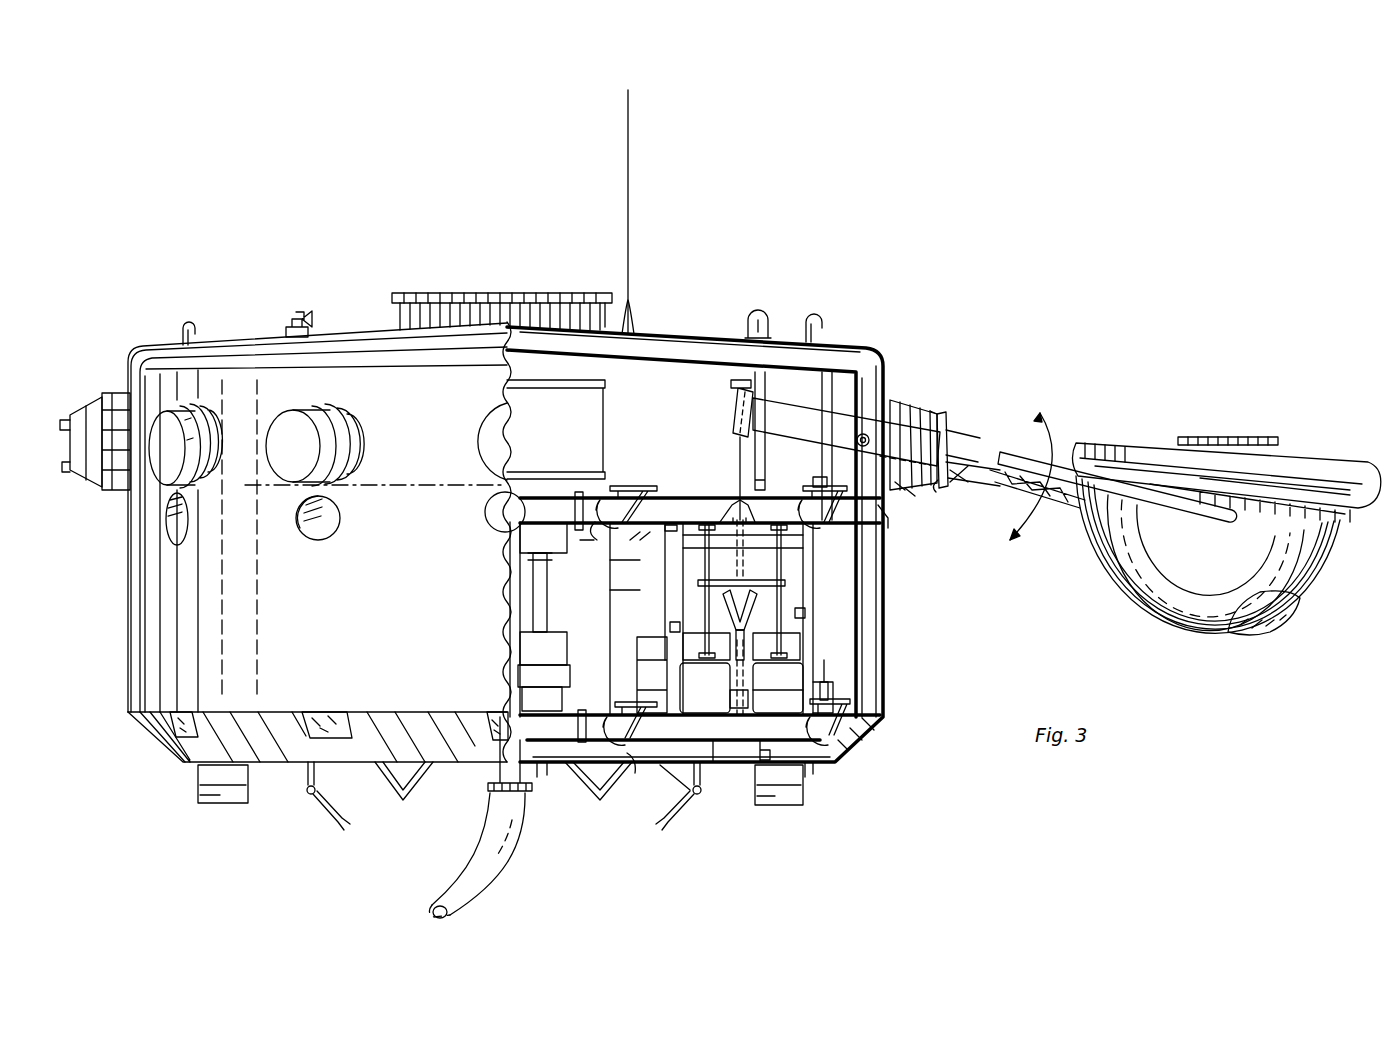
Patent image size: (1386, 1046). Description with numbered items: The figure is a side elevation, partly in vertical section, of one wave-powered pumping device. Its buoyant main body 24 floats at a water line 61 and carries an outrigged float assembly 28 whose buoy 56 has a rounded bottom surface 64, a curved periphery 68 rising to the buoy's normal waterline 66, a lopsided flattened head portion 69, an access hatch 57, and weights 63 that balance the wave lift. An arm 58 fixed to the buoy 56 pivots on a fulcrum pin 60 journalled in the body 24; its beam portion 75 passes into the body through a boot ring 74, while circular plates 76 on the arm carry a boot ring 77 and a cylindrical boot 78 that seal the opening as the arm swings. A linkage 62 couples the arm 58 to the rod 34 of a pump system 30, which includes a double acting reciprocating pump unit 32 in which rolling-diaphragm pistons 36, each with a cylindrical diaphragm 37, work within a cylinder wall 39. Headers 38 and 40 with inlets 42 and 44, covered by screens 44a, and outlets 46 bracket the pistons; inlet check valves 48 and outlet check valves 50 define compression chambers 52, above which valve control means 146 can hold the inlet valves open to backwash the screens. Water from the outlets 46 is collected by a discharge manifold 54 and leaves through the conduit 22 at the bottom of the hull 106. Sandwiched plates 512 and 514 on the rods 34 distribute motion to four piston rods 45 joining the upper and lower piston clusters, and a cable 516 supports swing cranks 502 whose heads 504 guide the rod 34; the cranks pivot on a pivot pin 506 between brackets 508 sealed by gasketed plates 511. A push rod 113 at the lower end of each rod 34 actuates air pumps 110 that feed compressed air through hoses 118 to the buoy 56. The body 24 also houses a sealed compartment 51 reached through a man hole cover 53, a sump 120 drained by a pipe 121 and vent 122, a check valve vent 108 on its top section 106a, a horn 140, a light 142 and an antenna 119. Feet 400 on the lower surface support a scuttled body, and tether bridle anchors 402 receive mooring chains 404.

The conduit 22 is at (472, 842).
The main body portion 24 is at (675, 314).
The float assembly 28 is at (80, 399).
The pump system 30 is at (540, 534).
The double acting reciprocating pump unit 32 is at (622, 580).
The rod 34 is at (740, 472).
The piston 36 is at (646, 550).
The diaphragm 37 is at (670, 528).
The header 38 is at (610, 529).
The cylinder wall 39 is at (640, 540).
The header 40 is at (588, 744).
The inlet 42 is at (186, 505).
The inlet 44 is at (174, 744).
The screen 44a is at (195, 713).
The piston rod 45 is at (744, 504).
The outlet 46 is at (512, 496).
The inlet check valve 48 is at (817, 506).
The outlet check valve 50 is at (632, 501).
The sealed compartment 51 is at (594, 430).
The compression chamber 52 is at (740, 513).
The man hole cover 53 is at (486, 292).
The discharge manifold 54 is at (508, 620).
The buoy 56 is at (1330, 541).
The access hatch 57 is at (1224, 446).
The arm 58 is at (1010, 448).
The fulcrum pin 60 is at (852, 436).
The water line 61 is at (404, 486).
The linkage 62 is at (730, 410).
The weights 63 is at (1264, 627).
The rounded bottom surface 64 is at (1130, 614).
The normal waterline 66 is at (1220, 544).
The periphery 68 is at (1100, 560).
The head portion 69 is at (1318, 473).
The boot ring 74 is at (890, 404).
The beam portion 75 is at (786, 411).
The circular plate 76 is at (944, 434).
The boot ring 77 is at (940, 418).
The cylindrical boot 78 is at (924, 412).
The hull 106 is at (681, 793).
The top section 106a is at (695, 334).
The check valve vent 108 is at (188, 326).
The air pump 110 is at (706, 766).
The push rod 113 is at (728, 680).
The hose 118 is at (938, 490).
The antenna 119 is at (628, 197).
The sump 120 is at (541, 773).
The pipe 121 is at (626, 760).
The vent 122 is at (814, 322).
The horn 140 is at (303, 314).
The light 142 is at (762, 318).
The valve control means 146 is at (814, 485).
The feet 400 is at (232, 800).
The tether bridle anchor 402 is at (328, 782).
The chain 404 is at (356, 816).
The swing crank 502 is at (790, 630).
The head 504 is at (778, 695).
The pivot pin 506 is at (795, 622).
The bracket 508 is at (672, 648).
The plate 511 is at (670, 628).
The plate 512 is at (780, 580).
The plate 514 is at (705, 597).
The cable 516 is at (720, 600).